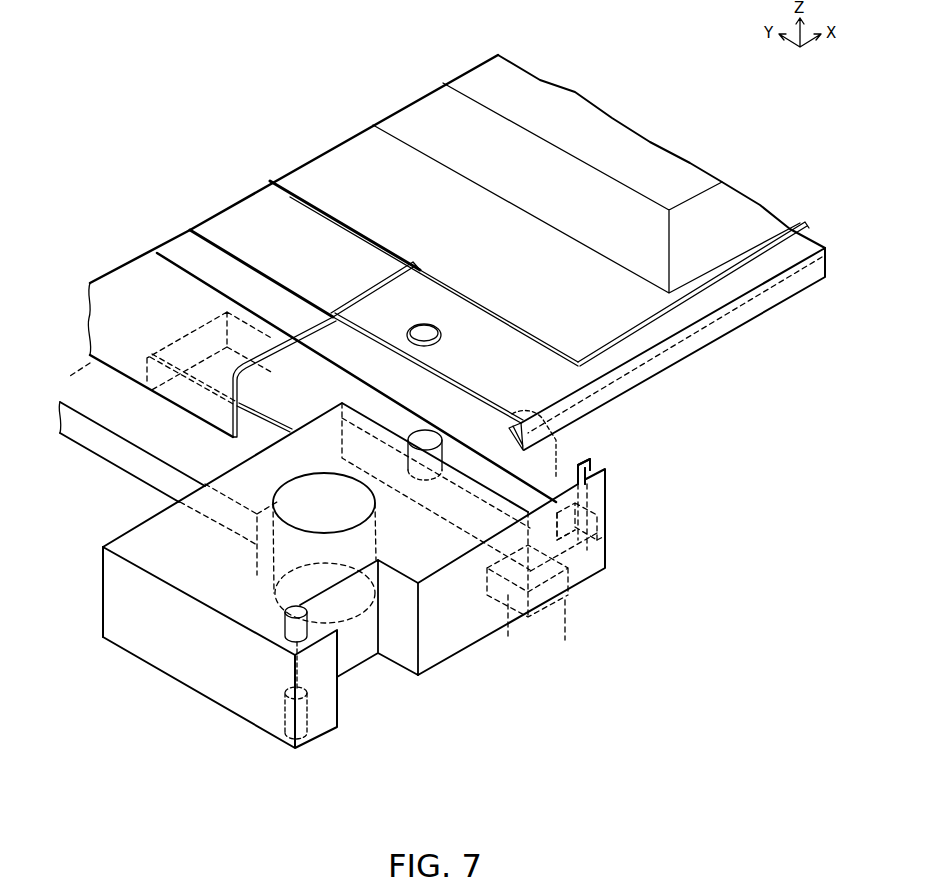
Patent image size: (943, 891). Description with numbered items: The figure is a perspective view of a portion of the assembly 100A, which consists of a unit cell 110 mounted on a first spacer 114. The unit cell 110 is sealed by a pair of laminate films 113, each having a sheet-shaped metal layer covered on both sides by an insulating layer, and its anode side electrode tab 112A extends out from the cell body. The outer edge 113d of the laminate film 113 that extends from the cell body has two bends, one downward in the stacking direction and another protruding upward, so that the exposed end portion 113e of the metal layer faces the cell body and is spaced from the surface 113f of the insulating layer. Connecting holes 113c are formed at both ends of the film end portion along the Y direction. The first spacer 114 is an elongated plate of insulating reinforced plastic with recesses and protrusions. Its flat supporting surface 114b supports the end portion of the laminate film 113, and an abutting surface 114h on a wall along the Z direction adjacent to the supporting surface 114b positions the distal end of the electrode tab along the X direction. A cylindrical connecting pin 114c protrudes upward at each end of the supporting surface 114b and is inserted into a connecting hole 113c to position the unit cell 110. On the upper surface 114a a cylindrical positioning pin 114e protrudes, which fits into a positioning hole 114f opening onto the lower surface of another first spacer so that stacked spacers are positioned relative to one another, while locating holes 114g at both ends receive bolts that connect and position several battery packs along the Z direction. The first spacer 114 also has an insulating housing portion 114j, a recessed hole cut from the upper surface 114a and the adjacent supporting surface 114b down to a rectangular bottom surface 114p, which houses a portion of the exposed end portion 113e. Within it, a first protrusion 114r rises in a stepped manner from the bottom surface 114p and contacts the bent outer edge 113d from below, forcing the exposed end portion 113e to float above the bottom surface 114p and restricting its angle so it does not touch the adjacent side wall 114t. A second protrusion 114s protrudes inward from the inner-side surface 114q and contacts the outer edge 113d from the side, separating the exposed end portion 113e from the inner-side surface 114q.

The assembly 100A is at (119, 59).
The unit cell 110 is at (446, 64).
The anode side electrode tab 112A is at (133, 278).
The laminate film 113 is at (403, 108).
The connecting hole 113c is at (413, 323).
The outer edge 113d is at (620, 370).
The exposed end portion 113e is at (491, 420).
The surface 113f is at (318, 208).
The first spacer 114 is at (98, 380).
The upper surface 114a is at (222, 522).
The supporting surface 114b is at (285, 403).
The connecting pin 114c is at (409, 446).
The positioning pin 114e is at (288, 610).
The positioning hole 114f is at (292, 712).
The locating hole 114g is at (283, 521).
The abutting surface 114h is at (125, 452).
The housing portion 114j is at (514, 585).
The bottom surface 114p is at (563, 595).
The inner-side surface 114q is at (551, 480).
The first protrusion 114r is at (605, 537).
The second protrusion 114s is at (581, 464).
The side wall 114t is at (607, 503).